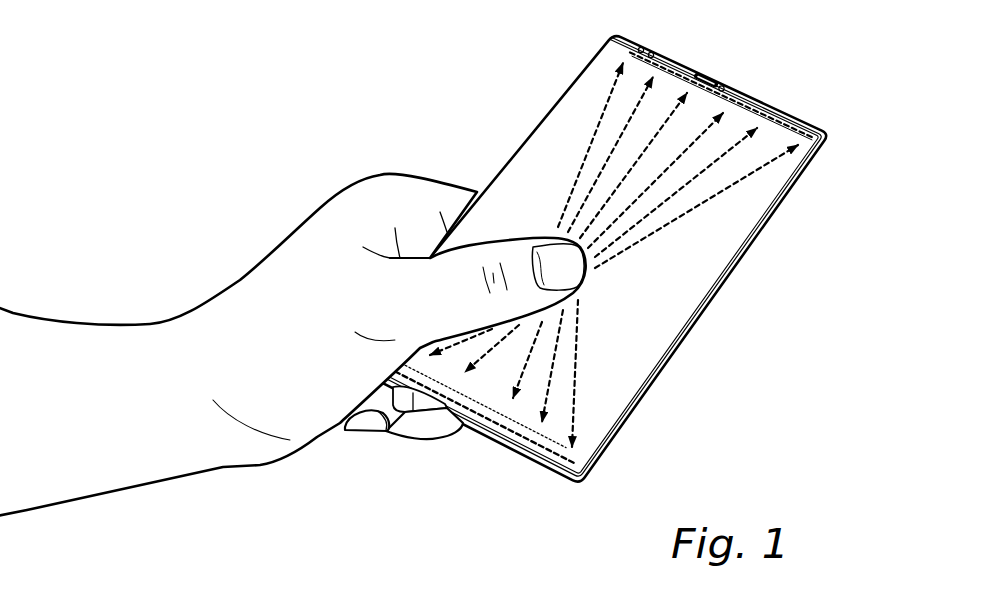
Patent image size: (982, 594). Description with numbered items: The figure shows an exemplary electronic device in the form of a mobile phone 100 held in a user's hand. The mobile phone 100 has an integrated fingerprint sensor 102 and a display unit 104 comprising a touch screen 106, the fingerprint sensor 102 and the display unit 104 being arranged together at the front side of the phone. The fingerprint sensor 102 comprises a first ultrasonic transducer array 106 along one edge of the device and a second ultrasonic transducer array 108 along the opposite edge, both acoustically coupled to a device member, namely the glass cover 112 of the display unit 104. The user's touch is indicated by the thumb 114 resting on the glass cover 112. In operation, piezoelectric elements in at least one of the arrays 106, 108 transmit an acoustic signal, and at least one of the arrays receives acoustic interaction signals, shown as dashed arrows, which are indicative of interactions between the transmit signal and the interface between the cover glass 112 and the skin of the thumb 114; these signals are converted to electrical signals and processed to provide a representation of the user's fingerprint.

The mobile phone 100 is at (792, 250).
The fingerprint sensor 102 is at (652, 413).
The display unit 104 is at (687, 292).
The first ultrasonic transducer array 106 is at (532, 461).
The second ultrasonic transducer array 108 is at (778, 110).
The glass cover 112 is at (524, 160).
The thumb 114 is at (543, 252).